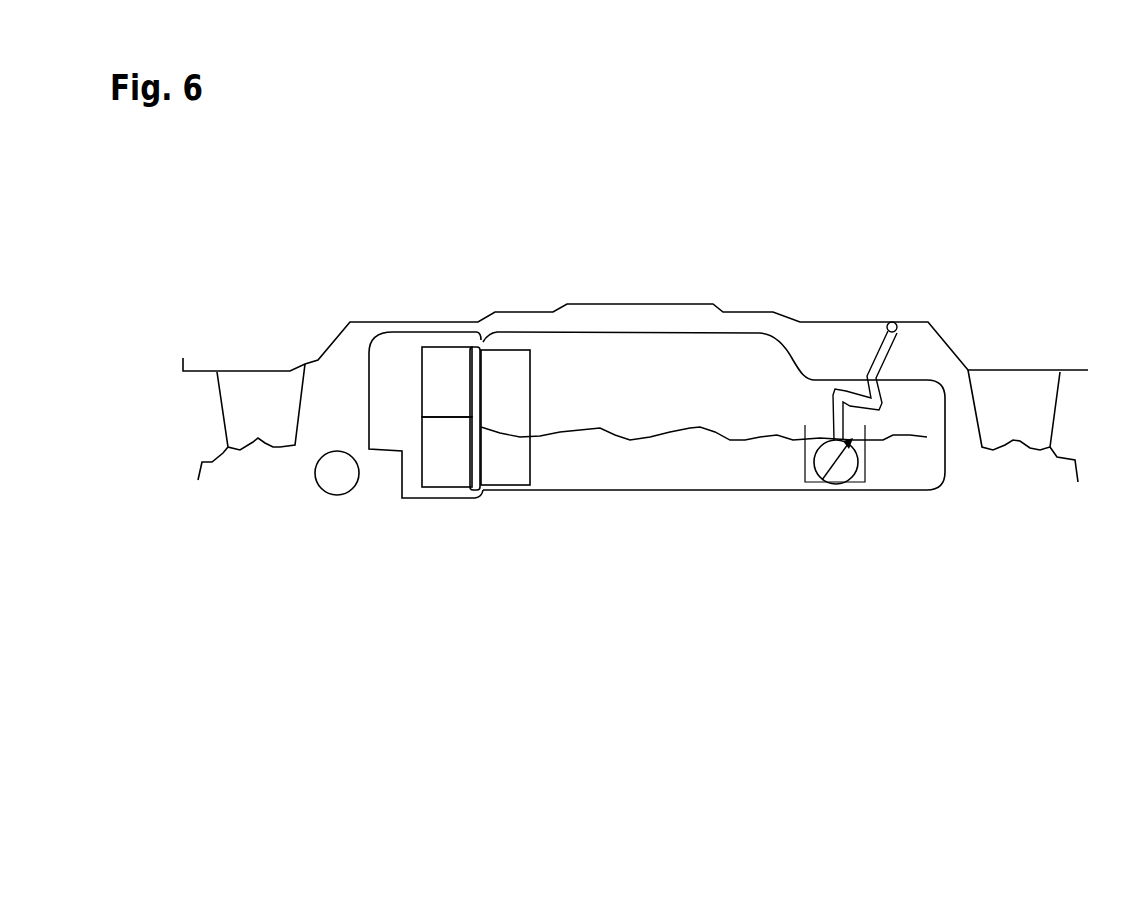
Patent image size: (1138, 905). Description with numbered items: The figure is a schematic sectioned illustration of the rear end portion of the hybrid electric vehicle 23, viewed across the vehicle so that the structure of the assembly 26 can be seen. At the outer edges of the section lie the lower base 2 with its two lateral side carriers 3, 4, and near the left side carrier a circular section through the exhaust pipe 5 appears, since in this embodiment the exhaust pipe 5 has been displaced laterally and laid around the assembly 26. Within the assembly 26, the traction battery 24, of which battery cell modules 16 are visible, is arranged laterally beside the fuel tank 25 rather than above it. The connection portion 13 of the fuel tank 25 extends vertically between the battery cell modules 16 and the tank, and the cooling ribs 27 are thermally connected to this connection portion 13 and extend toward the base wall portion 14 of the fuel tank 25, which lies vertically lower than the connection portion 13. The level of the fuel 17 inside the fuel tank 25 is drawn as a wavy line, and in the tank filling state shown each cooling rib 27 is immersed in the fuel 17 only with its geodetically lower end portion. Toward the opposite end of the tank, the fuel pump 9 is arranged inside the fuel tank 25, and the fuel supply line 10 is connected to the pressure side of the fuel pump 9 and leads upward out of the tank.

The lower base 2 is at (762, 312).
The lateral side carrier 3 is at (252, 425).
The lateral side carrier 4 is at (1027, 425).
The exhaust pipe 5 is at (328, 500).
The fuel pump 9 is at (848, 473).
The fuel supply line 10 is at (905, 343).
The connection portion 13 is at (482, 467).
The base wall portion 14 is at (588, 490).
The battery cell module 16 is at (447, 372).
The fuel 17 is at (915, 467).
The hybrid electric vehicle 23 is at (653, 245).
The traction battery 24 is at (400, 372).
The fuel tank 25 is at (755, 503).
The assembly 26 is at (827, 333).
The cooling rib 27 is at (512, 383).